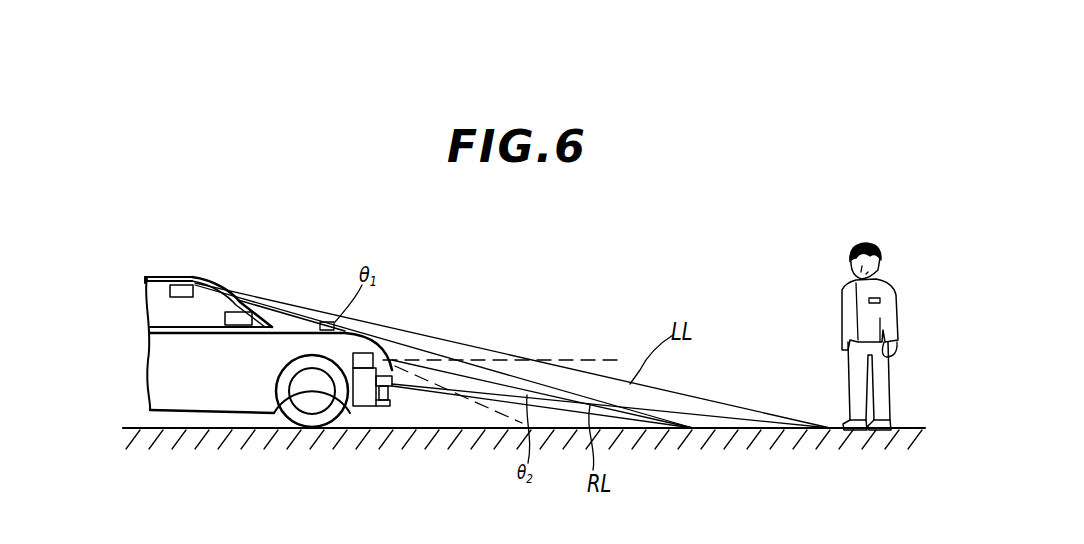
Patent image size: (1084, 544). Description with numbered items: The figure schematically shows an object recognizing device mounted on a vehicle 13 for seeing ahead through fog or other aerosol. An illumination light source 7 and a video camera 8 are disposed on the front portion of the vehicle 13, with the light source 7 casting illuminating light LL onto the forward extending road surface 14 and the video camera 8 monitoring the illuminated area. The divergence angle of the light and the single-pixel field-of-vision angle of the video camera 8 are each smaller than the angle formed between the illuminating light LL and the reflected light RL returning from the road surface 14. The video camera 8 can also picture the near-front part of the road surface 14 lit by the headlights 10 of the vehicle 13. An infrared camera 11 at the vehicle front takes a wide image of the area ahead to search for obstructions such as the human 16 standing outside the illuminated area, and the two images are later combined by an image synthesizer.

The illumination light source 7 is at (188, 285).
The video camera 8 is at (383, 388).
The headlights 10 is at (365, 358).
The infrared camera 11 is at (252, 312).
The vehicle 13 is at (167, 363).
The road surface 14 is at (400, 429).
The human figure 16 is at (898, 320).